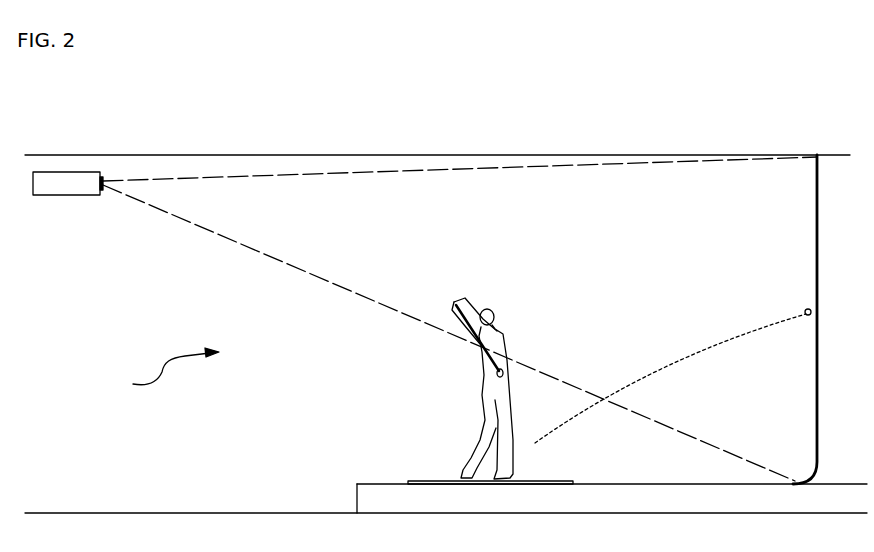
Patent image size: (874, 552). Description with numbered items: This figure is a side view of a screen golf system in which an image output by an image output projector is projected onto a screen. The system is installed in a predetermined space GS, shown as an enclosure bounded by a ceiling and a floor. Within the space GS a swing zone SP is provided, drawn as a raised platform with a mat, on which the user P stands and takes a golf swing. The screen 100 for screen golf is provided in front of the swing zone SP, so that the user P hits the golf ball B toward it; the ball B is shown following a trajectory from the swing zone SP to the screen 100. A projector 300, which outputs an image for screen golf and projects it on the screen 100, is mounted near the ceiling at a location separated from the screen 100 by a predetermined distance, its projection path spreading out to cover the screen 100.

The projector 300 is at (58, 197).
The screen 100 is at (815, 191).
The golf ball B is at (805, 308).
The user P is at (507, 335).
The space GS is at (161, 371).
The swing zone SP is at (412, 481).